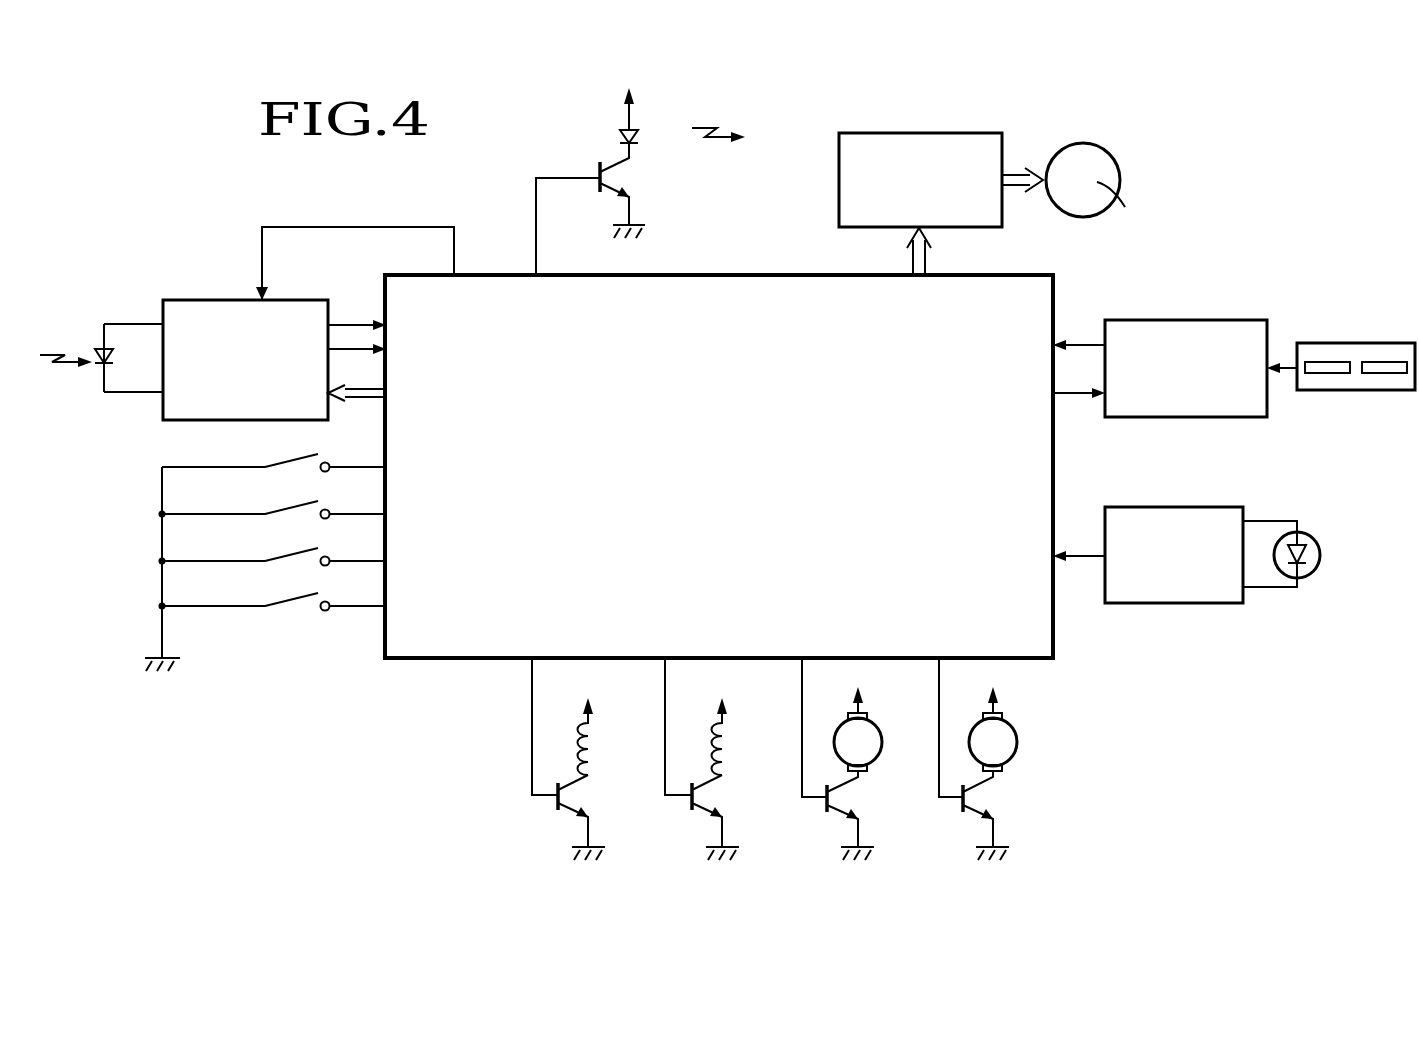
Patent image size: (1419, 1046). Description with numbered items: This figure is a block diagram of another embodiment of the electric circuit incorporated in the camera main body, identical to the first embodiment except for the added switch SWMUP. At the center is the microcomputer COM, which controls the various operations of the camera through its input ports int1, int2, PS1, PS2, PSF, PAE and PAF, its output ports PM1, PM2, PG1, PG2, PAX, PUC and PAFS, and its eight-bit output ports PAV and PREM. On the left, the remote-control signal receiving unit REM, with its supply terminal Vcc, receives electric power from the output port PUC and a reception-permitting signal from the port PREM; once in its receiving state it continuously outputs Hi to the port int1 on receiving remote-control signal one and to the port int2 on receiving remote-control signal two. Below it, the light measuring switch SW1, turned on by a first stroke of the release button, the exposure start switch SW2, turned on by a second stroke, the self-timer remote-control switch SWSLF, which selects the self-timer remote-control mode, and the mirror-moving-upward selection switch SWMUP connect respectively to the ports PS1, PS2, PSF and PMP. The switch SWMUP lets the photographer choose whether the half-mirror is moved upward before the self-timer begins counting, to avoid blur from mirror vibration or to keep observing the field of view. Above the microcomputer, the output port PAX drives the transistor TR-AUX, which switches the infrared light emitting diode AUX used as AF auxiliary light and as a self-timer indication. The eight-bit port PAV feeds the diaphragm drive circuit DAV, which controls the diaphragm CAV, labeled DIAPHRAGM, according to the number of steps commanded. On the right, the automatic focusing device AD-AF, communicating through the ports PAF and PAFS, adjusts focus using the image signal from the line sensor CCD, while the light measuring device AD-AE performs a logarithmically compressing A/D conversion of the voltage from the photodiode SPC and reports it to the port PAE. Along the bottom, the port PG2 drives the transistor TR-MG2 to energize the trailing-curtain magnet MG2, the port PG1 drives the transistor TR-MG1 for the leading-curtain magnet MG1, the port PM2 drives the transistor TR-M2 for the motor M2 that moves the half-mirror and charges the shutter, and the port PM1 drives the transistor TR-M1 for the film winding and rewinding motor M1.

The microcomputer COM is at (719, 466).
The remote-control signal receiving unit REM is at (184, 344).
The power supply terminal Vcc is at (353, 280).
The output port PUC is at (455, 292).
The input port int1 is at (372, 322).
The input port int2 is at (372, 348).
The 8-bit output port PREM is at (380, 393).
The light measuring switch SW1 is at (265, 554).
The exposure start switch SW2 is at (273, 501).
The self-timer remote-control switch SWSLF is at (273, 548).
The mirror-moving-upward selection switch SWMUP is at (273, 592).
The input port PS1 is at (398, 467).
The input port PS2 is at (399, 513).
The input port PSF is at (399, 560).
The mirror-up switch input port PMP is at (401, 605).
The output port PAX is at (560, 243).
The transistor TR-AUX is at (648, 190).
The infrared light emitting diode AUX is at (663, 119).
The diaphragm drive circuit DAV is at (941, 162).
The 8-bit output port PAV is at (920, 268).
The diaphragm CAV is at (1083, 163).
The diaphragm DIAPHRAGM is at (1154, 210).
The automatic focusing device AD-AF is at (1186, 352).
The input port PAF is at (1061, 342).
The output port PAFS is at (1056, 393).
The line sensor CCD is at (1341, 350).
The light measuring device AD-AE is at (1174, 538).
The input port PAE is at (1061, 553).
The photodiode SPC is at (1300, 554).
The output port PG2 is at (536, 710).
The transistor TR-MG2 is at (607, 817).
The magnet MG2 is at (608, 736).
The output port PG1 is at (671, 710).
The transistor TR-MG1 is at (741, 817).
The magnet MG1 is at (740, 736).
The output port PM2 is at (807, 711).
The transistor TR-M2 is at (874, 815).
The motor M2 is at (858, 729).
The output port PM1 is at (944, 711).
The transistor TR-M1 is at (1009, 815).
The motor M1 is at (993, 729).